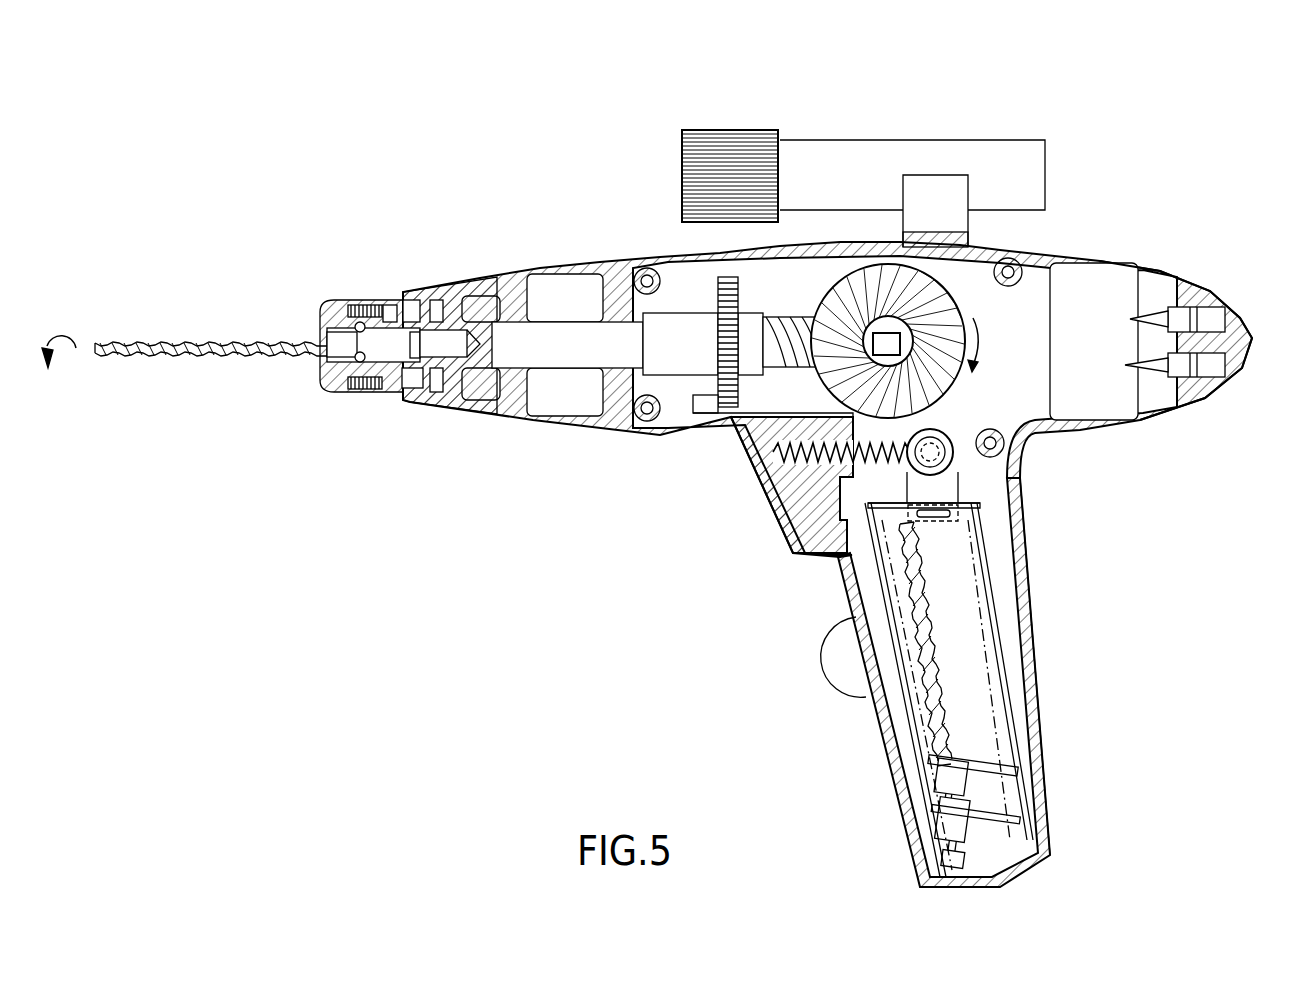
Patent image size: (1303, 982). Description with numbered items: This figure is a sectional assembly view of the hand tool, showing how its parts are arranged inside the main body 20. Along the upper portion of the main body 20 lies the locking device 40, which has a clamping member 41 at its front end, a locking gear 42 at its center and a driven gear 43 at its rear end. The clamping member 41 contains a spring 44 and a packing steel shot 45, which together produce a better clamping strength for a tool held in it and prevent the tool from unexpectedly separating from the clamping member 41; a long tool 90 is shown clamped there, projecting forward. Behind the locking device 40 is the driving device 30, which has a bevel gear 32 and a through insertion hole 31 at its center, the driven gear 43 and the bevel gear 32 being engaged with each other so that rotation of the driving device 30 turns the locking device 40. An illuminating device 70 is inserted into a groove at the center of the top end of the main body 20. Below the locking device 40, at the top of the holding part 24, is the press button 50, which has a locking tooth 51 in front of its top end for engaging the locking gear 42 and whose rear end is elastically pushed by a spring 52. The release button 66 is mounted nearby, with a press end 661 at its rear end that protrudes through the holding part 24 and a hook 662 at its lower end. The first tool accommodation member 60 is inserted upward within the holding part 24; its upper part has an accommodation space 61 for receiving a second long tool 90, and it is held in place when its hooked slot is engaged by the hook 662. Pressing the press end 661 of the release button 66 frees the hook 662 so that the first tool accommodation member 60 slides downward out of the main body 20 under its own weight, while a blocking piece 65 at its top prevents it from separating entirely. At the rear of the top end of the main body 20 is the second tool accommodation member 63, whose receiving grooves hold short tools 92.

The main body 20 is at (1040, 500).
The holding part 24 is at (1033, 655).
The driving device 30 is at (915, 328).
The insertion hole 31 is at (890, 333).
The bevel gear 32 is at (968, 282).
The locking device 40 is at (510, 335).
The clamping member 41 is at (333, 302).
The locking gear 42 is at (717, 278).
The driven gear 43 is at (788, 315).
The spring 44 is at (355, 296).
The packing steel shot 45 is at (373, 297).
The press button 50 is at (790, 507).
The locking tooth 51 is at (697, 402).
The spring 52 is at (780, 467).
The first tool accommodation member 60 is at (1013, 705).
The accommodation space 61 is at (985, 727).
The second tool accommodation member 63 is at (1200, 283).
The blocking piece 65 is at (950, 512).
The release button 66 is at (1003, 430).
The press end 661 is at (962, 458).
The hook 662 is at (943, 520).
The illuminating device 70 is at (893, 150).
The long tool 90 is at (212, 338).
The short tools 92 is at (1160, 377).